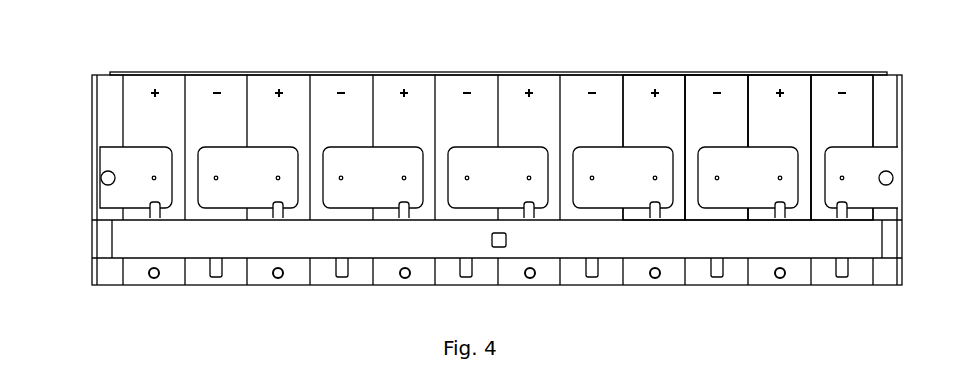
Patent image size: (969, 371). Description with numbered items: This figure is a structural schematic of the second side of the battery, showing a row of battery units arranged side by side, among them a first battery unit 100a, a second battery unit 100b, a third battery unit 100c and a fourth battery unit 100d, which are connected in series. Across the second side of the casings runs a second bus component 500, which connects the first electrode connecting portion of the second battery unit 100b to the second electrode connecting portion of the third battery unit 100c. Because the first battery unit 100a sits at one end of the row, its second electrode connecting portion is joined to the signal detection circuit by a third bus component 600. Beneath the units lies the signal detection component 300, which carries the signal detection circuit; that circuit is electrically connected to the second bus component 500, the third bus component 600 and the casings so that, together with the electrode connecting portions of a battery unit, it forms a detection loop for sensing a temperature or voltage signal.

The first battery unit 100a is at (851, 72).
The second battery unit 100b is at (778, 72).
The third battery unit 100c is at (716, 72).
The fourth battery unit 100d is at (652, 72).
The signal detection component 300 is at (593, 248).
The second bus component 500 is at (240, 157).
The third bus component 600 is at (112, 157).